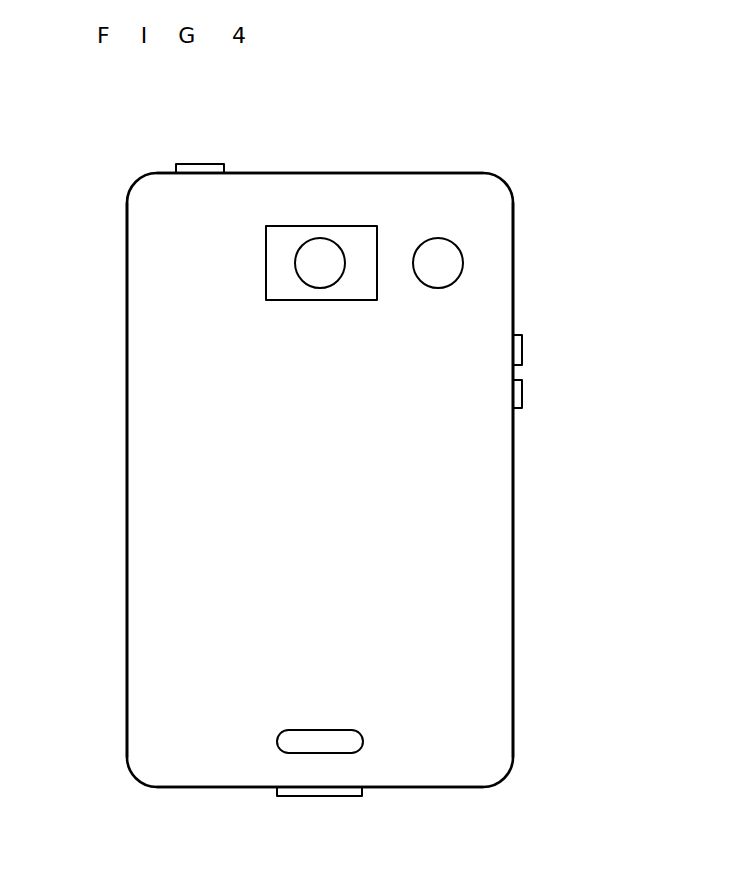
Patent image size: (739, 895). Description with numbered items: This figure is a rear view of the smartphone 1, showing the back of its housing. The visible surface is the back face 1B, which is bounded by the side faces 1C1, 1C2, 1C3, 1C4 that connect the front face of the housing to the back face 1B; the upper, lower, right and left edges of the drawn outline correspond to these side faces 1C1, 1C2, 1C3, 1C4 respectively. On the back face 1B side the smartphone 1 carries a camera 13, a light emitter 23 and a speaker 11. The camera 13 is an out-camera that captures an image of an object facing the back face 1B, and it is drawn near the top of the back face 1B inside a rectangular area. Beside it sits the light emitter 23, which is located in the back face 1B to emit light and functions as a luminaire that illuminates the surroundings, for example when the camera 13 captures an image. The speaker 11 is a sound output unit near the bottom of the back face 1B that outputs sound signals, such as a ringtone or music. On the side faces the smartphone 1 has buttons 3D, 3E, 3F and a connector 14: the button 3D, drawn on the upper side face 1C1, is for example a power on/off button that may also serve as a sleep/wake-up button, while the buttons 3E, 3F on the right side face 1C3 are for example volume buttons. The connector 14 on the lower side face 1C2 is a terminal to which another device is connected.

The smartphone 1 is at (532, 141).
The back face 1B is at (157, 437).
The side face 1C1 is at (423, 173).
The side face 1C2 is at (435, 788).
The side face 1C3 is at (514, 631).
The side face 1C4 is at (127, 574).
The button 3D is at (203, 164).
The button 3E is at (522, 350).
The button 3F is at (522, 395).
The speaker 11 is at (277, 741).
The camera 13 is at (321, 262).
The connector 14 is at (314, 797).
The light emitter 23 is at (463, 262).